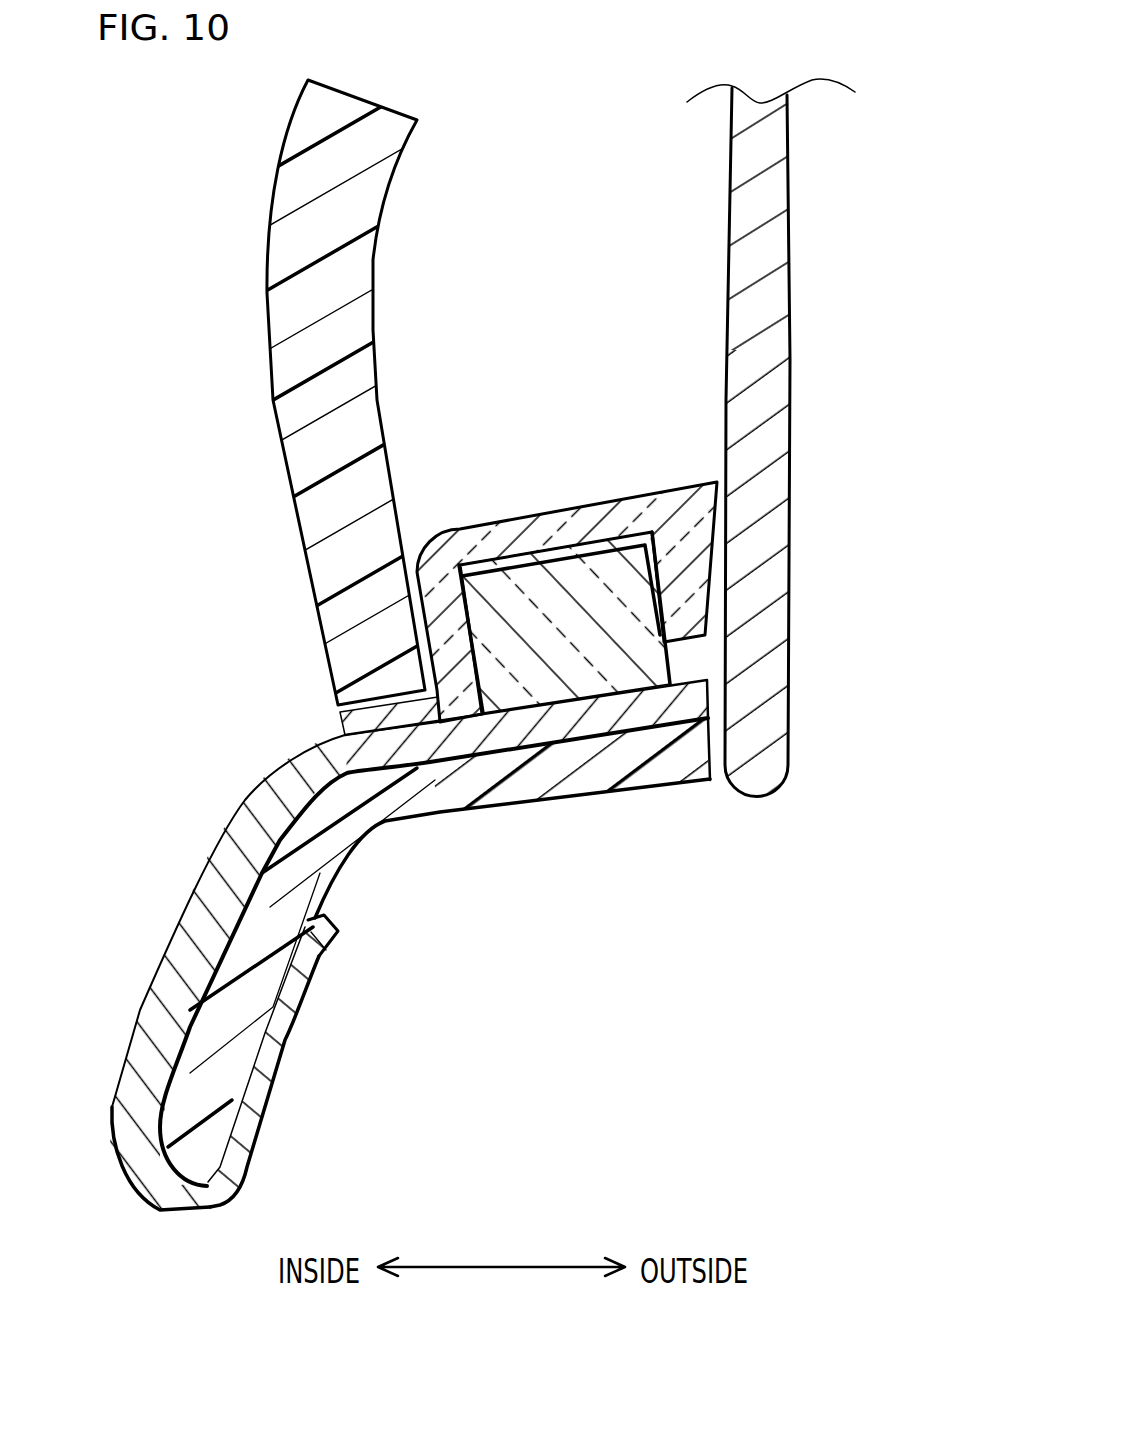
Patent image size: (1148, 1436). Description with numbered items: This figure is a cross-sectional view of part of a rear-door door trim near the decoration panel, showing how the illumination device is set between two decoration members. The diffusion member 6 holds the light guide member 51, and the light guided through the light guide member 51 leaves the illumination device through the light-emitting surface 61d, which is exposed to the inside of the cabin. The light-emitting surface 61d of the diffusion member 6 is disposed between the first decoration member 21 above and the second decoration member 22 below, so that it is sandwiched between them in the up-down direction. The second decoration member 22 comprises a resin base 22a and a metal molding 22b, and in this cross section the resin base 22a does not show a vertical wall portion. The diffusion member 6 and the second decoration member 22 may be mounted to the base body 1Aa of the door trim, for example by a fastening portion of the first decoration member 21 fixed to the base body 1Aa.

The first decoration member 21 is at (340, 522).
The diffusion member 6 is at (628, 522).
The base body 1Aa is at (765, 498).
The light-emitting surface 61d is at (342, 725).
The light guide member 51 is at (580, 647).
The second decoration member 22 is at (420, 945).
The resin base 22a is at (323, 845).
The metal molding 22b is at (217, 927).